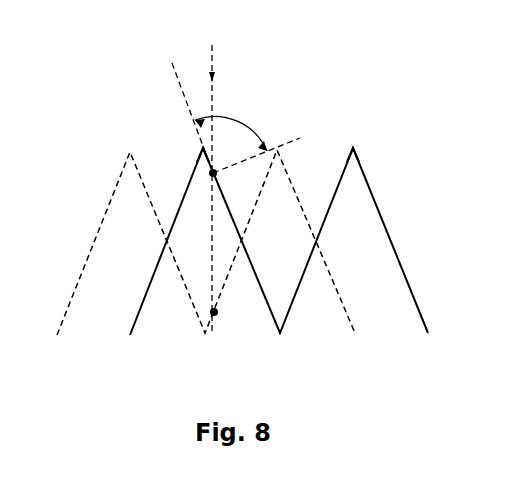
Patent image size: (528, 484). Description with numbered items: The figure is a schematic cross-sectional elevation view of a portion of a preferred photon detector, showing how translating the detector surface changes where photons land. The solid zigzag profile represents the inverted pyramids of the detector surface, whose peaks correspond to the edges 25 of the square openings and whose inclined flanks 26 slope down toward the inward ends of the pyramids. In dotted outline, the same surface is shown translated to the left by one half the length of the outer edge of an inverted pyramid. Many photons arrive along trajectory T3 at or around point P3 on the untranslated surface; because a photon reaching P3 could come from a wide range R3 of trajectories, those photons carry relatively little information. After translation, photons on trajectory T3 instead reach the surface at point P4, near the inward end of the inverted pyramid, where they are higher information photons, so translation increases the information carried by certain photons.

The edge 25 is at (203, 148).
The inclined side surface of projection 26 is at (180, 202).
The trajectory T3 is at (222, 189).
The range R3 is at (231, 129).
The point P3 is at (211, 175).
The point P4 is at (223, 324).